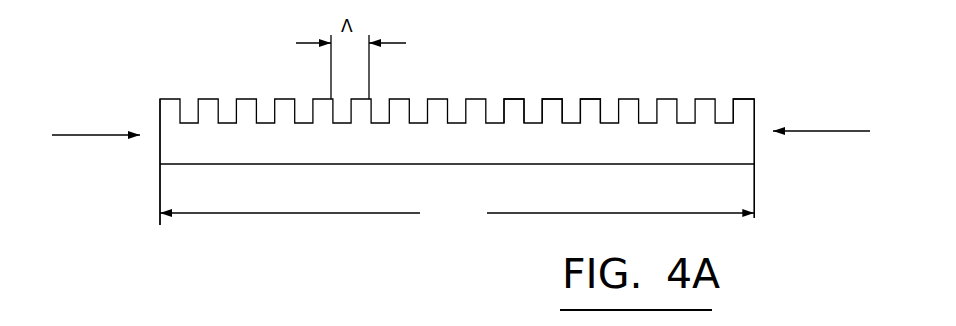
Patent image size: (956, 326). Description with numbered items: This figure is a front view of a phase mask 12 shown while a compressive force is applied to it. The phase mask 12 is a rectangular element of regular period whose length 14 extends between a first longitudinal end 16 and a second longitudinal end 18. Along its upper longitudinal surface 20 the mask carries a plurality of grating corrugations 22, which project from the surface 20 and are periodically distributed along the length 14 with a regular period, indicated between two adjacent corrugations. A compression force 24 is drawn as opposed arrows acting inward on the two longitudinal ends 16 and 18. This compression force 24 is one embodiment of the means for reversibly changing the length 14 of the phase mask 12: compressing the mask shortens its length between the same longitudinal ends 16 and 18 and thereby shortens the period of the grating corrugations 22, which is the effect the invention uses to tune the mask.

The phase mask 12 is at (196, 76).
The length 14 is at (457, 215).
The first longitudinal end 16 is at (757, 109).
The second longitudinal end 18 is at (159, 123).
The upper longitudinal surface 20 is at (740, 97).
The grating corrugations 22 is at (590, 98).
The compression force 24 is at (80, 136).